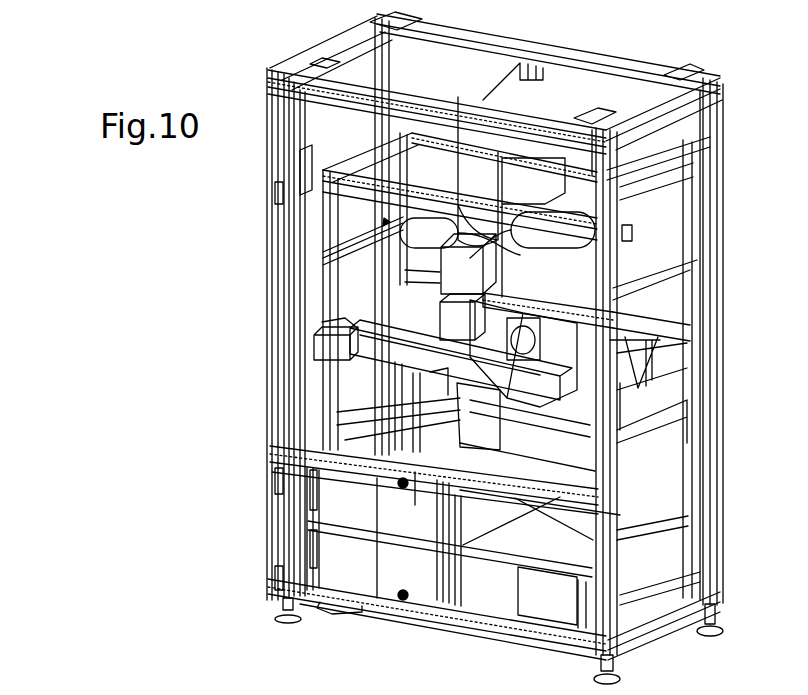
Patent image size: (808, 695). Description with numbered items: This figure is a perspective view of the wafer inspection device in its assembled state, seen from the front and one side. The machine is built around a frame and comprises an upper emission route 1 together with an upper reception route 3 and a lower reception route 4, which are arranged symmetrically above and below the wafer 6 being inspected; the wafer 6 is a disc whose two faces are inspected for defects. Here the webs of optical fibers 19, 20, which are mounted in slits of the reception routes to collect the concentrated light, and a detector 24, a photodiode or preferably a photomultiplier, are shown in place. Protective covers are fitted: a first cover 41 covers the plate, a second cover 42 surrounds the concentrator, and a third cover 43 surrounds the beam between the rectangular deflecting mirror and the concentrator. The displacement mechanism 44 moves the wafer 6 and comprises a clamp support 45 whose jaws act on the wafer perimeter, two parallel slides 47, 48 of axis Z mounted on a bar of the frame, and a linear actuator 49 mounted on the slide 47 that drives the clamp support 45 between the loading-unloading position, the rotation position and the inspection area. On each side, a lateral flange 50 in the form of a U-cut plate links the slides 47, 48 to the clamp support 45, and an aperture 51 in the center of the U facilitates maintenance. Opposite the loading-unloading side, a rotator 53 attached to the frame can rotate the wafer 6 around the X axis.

The upper emission route 1 is at (575, 84).
The upper reception route 3 is at (640, 240).
The lower reception route 4 is at (365, 212).
The wafer 6 is at (580, 291).
The web of optical fibers 19 is at (460, 236).
The web of optical fibers 20 is at (583, 247).
The detector 24 is at (630, 233).
The first cover 41 is at (560, 106).
The second cover 42 is at (541, 194).
The third cover 43 is at (475, 286).
The displacement mechanism 44 is at (310, 340).
The clamp support 45 is at (495, 228).
The slide 47 is at (414, 348).
The slide 48 is at (440, 385).
The linear actuator 49 is at (328, 330).
The lateral flange 50 is at (575, 381).
The aperture 51 is at (530, 428).
The rotator 53 is at (343, 222).